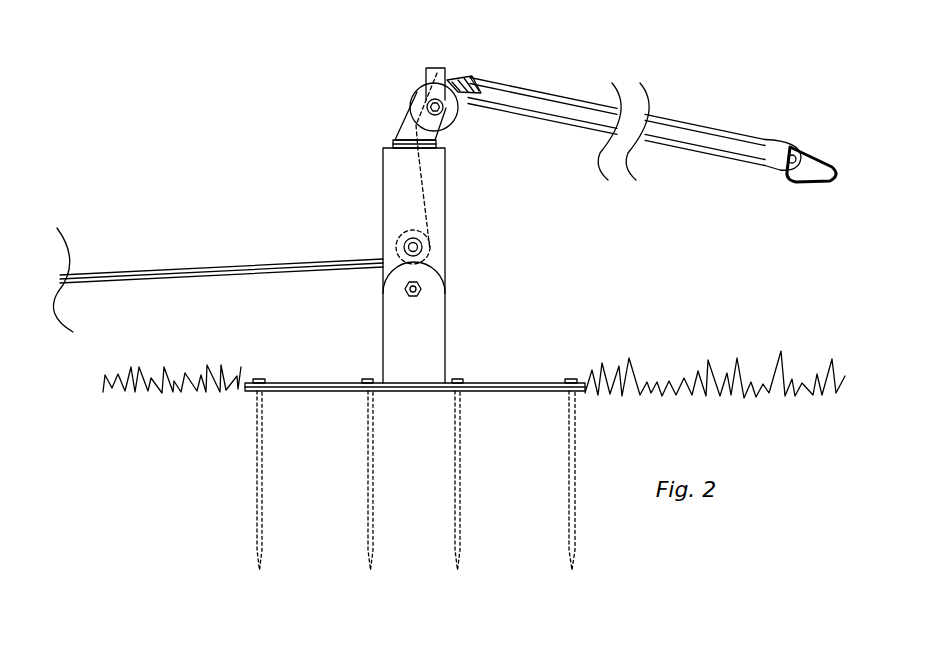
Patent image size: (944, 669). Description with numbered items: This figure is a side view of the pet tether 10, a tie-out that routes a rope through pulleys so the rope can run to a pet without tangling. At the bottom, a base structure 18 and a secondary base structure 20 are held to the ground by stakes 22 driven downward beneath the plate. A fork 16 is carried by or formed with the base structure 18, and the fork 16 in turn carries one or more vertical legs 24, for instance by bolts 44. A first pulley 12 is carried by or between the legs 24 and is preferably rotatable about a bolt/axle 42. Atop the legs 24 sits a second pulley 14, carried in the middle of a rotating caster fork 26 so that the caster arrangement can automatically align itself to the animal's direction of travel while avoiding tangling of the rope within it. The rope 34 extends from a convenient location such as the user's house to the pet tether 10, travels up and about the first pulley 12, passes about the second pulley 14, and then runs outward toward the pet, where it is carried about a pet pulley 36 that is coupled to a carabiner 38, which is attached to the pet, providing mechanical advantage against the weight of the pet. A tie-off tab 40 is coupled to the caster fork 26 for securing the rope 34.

The pet tether 10 is at (527, 266).
The first pulley 12 is at (396, 240).
The second pulley 14 is at (452, 113).
The fork 16 is at (432, 310).
The base structure 18 is at (374, 378).
The secondary base structure 20 is at (316, 380).
The stakes 22 is at (255, 378).
The legs 24 is at (443, 193).
The caster fork 26 is at (408, 127).
The rope 34 is at (232, 269).
The pet pulley 36 is at (773, 150).
The carabiner 38 is at (827, 148).
The tie-off tab 40 is at (468, 78).
The bolt/axle 42 is at (421, 247).
The bolts 44 is at (406, 289).